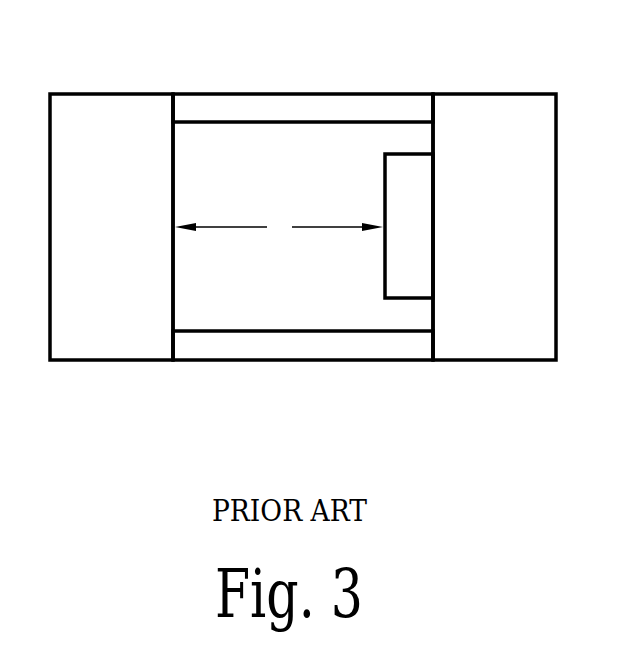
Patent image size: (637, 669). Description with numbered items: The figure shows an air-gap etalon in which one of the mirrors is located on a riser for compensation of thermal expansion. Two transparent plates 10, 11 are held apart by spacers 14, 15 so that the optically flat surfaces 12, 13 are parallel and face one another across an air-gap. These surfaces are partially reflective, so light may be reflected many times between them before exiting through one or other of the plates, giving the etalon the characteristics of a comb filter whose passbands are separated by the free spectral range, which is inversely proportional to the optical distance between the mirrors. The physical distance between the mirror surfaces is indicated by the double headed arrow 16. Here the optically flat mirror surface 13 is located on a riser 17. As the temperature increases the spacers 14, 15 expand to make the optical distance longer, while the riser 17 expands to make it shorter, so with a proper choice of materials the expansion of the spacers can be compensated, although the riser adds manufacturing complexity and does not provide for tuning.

The plate 10 is at (117, 335).
The plate 11 is at (500, 330).
The optically flat surface 12 is at (173, 166).
The optically flat mirror surface 13 is at (385, 177).
The spacer 14 is at (383, 108).
The spacer 15 is at (390, 345).
The double headed arrow 16 is at (282, 230).
The riser 17 is at (420, 187).